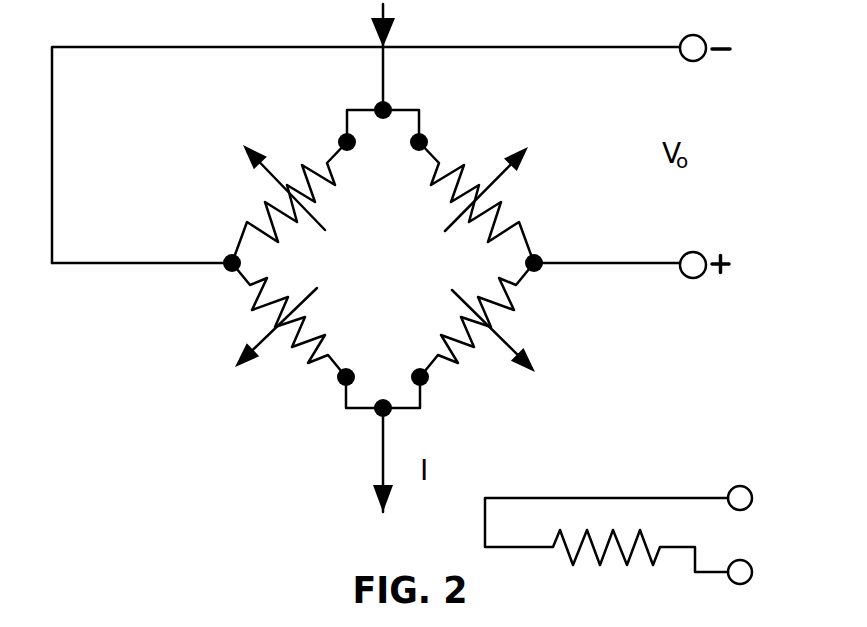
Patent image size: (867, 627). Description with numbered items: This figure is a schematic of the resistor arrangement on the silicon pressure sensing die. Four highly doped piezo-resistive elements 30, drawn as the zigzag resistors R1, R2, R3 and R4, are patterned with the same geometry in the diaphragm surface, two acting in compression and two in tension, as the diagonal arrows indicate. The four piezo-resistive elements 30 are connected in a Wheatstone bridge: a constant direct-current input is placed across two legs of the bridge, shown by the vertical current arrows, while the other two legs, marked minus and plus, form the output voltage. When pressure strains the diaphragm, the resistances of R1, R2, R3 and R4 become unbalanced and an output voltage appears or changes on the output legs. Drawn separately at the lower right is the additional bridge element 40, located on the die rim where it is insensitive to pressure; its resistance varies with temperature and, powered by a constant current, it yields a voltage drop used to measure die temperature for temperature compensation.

The piezo-resistive elements 30 is at (384, 254).
The bridge element 40 is at (637, 498).
The bridge resistor R1 is at (470, 202).
The bridge resistor R2 is at (298, 202).
The bridge resistor R3 is at (298, 320).
The bridge resistor R4 is at (470, 320).